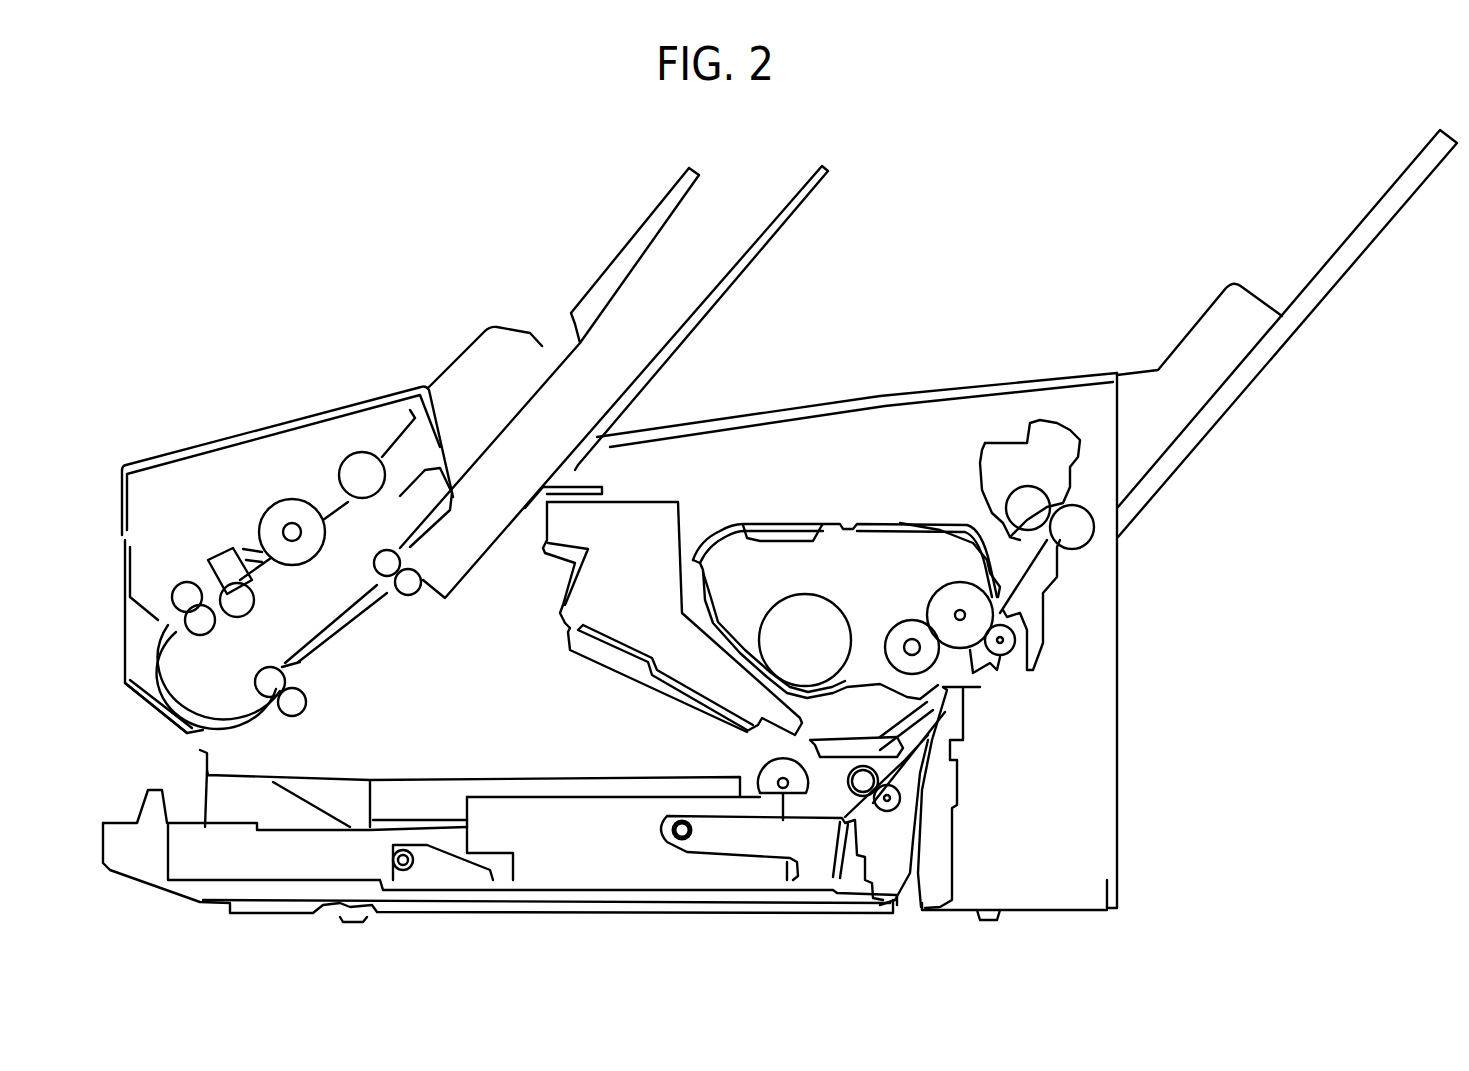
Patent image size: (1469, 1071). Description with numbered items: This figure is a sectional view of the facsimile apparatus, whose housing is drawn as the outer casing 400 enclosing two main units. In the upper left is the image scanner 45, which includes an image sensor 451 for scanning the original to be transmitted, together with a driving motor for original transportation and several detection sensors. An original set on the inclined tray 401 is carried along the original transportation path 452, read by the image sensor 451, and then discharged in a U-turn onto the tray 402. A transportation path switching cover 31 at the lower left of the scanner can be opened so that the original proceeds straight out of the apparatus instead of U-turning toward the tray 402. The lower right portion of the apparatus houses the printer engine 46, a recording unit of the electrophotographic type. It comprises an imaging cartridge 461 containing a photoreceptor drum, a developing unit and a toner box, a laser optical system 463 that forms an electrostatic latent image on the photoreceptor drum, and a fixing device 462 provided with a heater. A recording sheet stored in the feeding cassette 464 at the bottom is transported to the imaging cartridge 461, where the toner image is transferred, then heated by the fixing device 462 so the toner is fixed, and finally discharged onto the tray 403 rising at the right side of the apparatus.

The transportation path switching cover 31 is at (136, 722).
The image scanner 45 is at (287, 559).
The printer engine 46 is at (1017, 765).
The image forming apparatus housing 400 is at (1120, 713).
The tray 401 is at (627, 240).
The tray 402 is at (750, 240).
The tray 403 is at (1368, 234).
The image sensor 451 is at (218, 556).
The original transportation path 452 is at (165, 697).
The imaging cartridge 461 is at (863, 525).
The fixing device 462 is at (996, 452).
The laser optical system 463 is at (658, 498).
The feeding cassette 464 is at (527, 790).